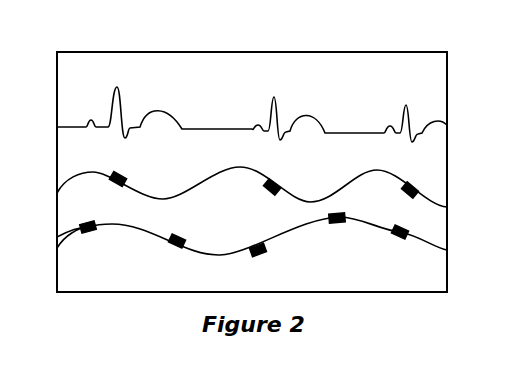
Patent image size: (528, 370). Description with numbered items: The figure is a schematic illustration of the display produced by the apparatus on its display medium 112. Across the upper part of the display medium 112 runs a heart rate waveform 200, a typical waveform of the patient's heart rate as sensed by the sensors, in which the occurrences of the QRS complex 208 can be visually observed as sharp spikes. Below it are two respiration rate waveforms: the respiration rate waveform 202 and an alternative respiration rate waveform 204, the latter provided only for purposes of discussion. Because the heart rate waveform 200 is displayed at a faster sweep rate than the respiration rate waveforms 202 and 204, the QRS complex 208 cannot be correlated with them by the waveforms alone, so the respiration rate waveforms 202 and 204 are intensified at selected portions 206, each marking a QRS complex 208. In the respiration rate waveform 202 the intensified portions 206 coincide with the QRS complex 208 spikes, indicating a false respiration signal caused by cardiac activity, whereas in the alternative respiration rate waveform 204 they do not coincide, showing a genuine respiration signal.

The display medium 112 is at (125, 292).
The heart rate waveform 200 is at (252, 84).
The respiration rate waveform 202 is at (435, 171).
The alternative respiration rate waveform 204 is at (364, 282).
The intensified portions 206 is at (265, 184).
The QRS complex 208 is at (134, 103).